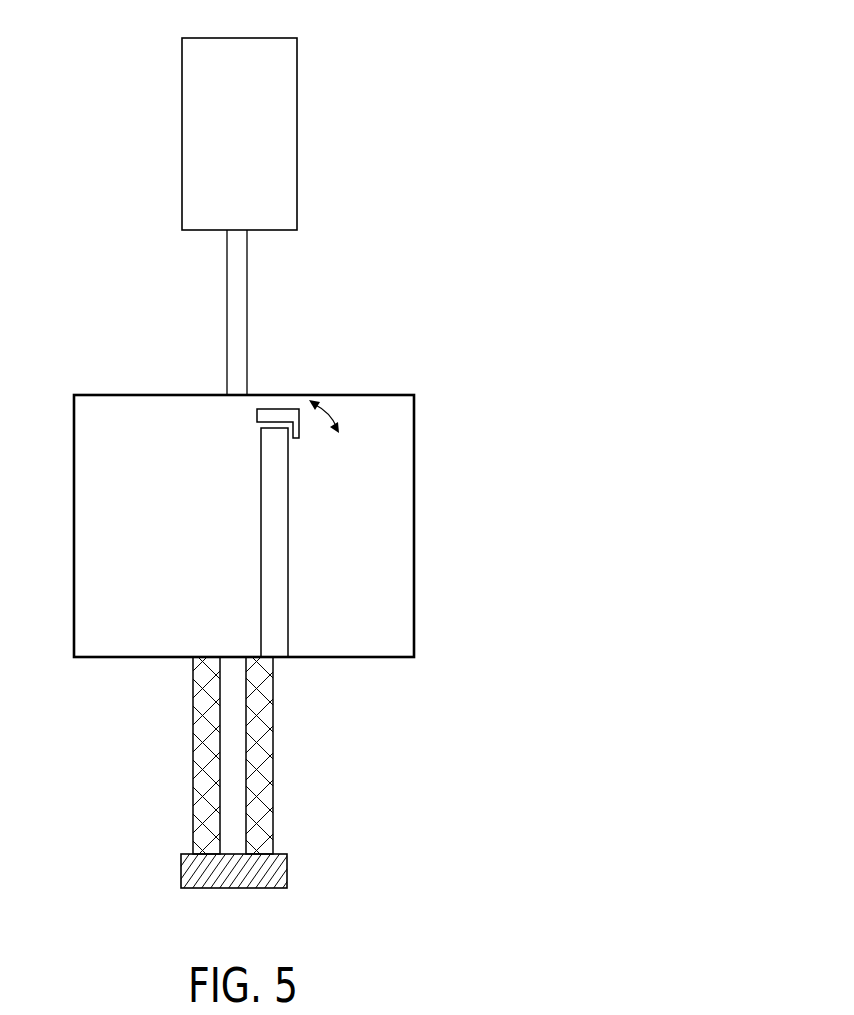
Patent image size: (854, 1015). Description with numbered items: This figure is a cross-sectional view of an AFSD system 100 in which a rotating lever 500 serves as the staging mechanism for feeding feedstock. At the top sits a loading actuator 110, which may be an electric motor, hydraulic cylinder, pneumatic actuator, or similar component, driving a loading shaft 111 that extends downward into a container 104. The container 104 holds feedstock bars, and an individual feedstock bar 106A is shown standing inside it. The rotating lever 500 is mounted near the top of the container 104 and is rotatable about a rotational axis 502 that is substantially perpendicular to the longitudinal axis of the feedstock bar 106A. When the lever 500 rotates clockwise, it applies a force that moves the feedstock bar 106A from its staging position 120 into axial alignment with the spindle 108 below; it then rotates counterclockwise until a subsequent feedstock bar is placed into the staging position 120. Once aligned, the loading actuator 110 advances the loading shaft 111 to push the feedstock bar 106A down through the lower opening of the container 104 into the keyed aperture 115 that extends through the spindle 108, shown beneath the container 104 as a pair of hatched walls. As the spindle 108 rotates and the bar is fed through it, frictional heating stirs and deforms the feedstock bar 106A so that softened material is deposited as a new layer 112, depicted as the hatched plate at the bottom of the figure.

The AFSD system 100 is at (374, 67).
The container 104 is at (415, 486).
The feedstock bar 106A is at (261, 580).
The spindle 108 is at (192, 812).
The loading actuator 110 is at (159, 296).
The loading shaft 111 is at (248, 292).
The new layer 112 is at (288, 870).
The aperture 115 is at (214, 705).
The staging position 120 is at (251, 496).
The rotating lever 500 is at (297, 438).
The rotational axis 502 is at (278, 413).